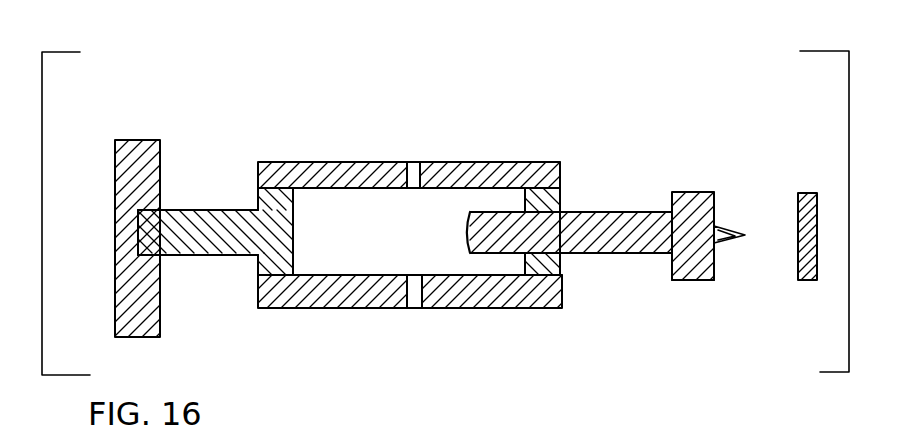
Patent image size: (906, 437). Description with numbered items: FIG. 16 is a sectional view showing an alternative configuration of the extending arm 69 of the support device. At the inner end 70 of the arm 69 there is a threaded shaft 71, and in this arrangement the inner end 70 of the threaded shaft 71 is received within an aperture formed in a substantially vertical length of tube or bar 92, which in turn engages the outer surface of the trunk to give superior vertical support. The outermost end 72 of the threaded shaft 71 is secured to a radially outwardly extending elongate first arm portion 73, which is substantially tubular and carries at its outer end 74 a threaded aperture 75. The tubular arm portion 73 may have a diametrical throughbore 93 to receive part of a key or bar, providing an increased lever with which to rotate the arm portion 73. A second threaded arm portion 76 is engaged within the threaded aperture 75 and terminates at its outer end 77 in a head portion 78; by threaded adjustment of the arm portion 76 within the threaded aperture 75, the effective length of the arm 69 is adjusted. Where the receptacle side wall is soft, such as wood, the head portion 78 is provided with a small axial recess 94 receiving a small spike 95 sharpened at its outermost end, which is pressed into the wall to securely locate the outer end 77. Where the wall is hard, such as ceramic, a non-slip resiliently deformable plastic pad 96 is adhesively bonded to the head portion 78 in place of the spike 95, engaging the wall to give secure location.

The extending arm 69 is at (448, 129).
The inner end 70 is at (178, 184).
The threaded shaft 71 is at (177, 245).
The outermost end 72 is at (277, 250).
The first arm portion 73 is at (360, 310).
The outer end 74 is at (585, 299).
The threaded aperture 75 is at (562, 205).
The second threaded arm portion 76 is at (591, 205).
The outer end 77 is at (713, 190).
The head portion 78 is at (697, 281).
The tube or bar 92 is at (135, 138).
The diametrical throughbore 93 is at (420, 318).
The axial recess 94 is at (718, 245).
The spike 95 is at (723, 225).
The plastic pad 96 is at (805, 283).